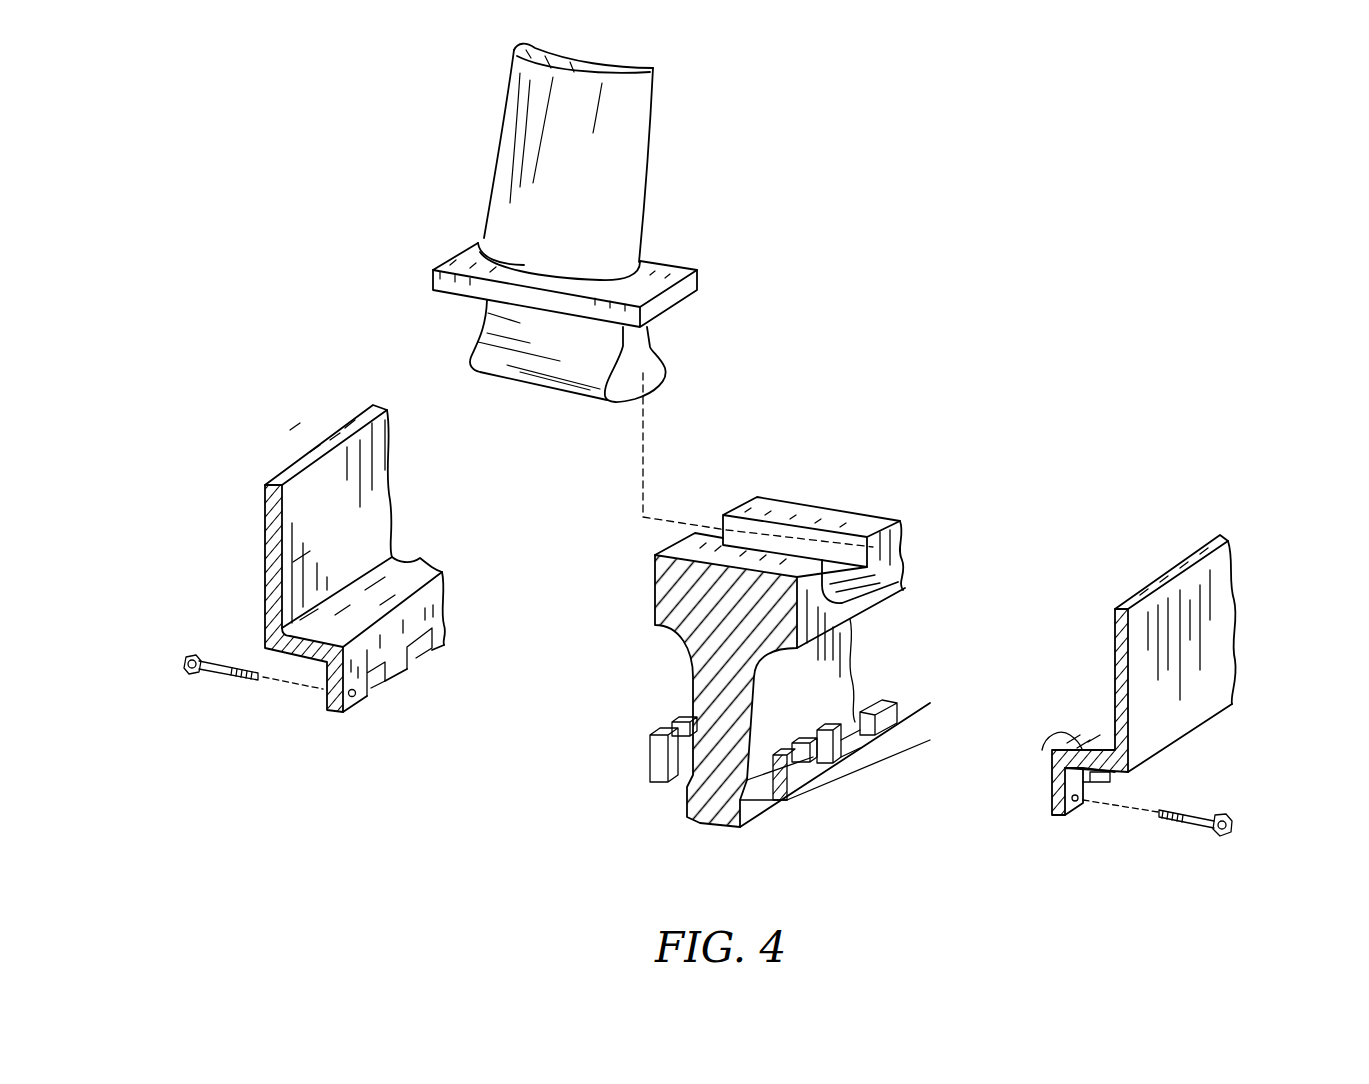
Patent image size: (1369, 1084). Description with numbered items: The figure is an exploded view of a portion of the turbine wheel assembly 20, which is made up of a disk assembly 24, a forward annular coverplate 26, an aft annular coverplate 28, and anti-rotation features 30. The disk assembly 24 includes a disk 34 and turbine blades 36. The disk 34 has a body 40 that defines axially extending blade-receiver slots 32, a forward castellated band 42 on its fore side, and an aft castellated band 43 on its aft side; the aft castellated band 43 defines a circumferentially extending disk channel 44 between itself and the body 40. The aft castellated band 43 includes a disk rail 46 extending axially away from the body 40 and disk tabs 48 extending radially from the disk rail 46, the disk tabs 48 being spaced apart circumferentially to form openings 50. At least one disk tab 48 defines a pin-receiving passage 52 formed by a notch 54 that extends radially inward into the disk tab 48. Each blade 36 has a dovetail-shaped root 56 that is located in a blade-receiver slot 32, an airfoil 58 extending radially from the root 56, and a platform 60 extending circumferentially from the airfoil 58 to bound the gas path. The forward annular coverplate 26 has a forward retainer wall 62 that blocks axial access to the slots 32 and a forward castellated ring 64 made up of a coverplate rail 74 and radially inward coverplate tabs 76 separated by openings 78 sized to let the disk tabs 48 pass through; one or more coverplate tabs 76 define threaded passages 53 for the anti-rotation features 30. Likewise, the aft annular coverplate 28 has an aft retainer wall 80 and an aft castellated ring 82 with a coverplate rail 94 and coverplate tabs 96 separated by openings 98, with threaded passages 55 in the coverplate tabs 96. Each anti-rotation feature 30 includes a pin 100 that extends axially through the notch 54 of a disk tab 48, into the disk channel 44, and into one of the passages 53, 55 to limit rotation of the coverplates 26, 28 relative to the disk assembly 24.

The turbine wheel assembly 20 is at (122, 120).
The disk assembly 24 is at (816, 269).
The forward annular coverplate 26 is at (322, 594).
The aft annular coverplate 28 is at (1171, 709).
The anti-rotation feature 30 is at (190, 640).
The blade-receiver slot 32 is at (762, 662).
The disk 34 is at (898, 508).
The turbine blade 36 is at (653, 295).
The body 40 is at (693, 680).
The forward castellated band 42 is at (688, 823).
The aft castellated band 43 is at (851, 778).
The disk channel 44 is at (761, 748).
The disk rail 46 is at (653, 800).
The disk tab 48 is at (672, 723).
The opening 50 is at (881, 727).
The pin-receiving passage 52 is at (656, 727).
The passage 53 is at (352, 710).
The notch 54 is at (677, 768).
The passage 55 is at (1112, 772).
The root 56 is at (660, 357).
The airfoil 58 is at (647, 168).
The platform 60 is at (690, 287).
The forward retainer wall 62 is at (262, 512).
The forward castellated ring 64 is at (391, 594).
The coverplate rail 74 is at (420, 563).
The coverplate tab 76 is at (407, 668).
The opening 78 is at (370, 665).
The aft retainer wall 80 is at (1203, 579).
The aft castellated ring 82 is at (1060, 847).
The coverplate rail 94 is at (1043, 749).
The coverplate tab 96 is at (1072, 815).
The opening 98 is at (1086, 778).
The pin 100 is at (197, 678).